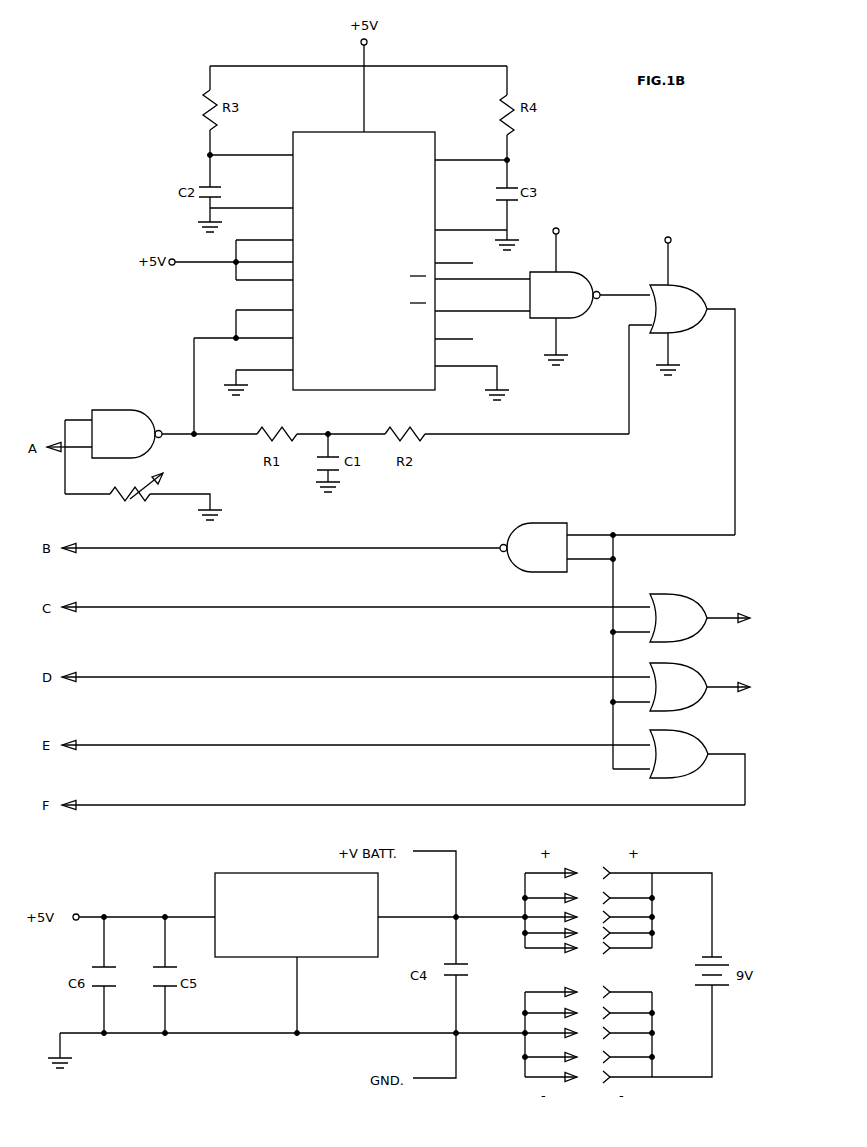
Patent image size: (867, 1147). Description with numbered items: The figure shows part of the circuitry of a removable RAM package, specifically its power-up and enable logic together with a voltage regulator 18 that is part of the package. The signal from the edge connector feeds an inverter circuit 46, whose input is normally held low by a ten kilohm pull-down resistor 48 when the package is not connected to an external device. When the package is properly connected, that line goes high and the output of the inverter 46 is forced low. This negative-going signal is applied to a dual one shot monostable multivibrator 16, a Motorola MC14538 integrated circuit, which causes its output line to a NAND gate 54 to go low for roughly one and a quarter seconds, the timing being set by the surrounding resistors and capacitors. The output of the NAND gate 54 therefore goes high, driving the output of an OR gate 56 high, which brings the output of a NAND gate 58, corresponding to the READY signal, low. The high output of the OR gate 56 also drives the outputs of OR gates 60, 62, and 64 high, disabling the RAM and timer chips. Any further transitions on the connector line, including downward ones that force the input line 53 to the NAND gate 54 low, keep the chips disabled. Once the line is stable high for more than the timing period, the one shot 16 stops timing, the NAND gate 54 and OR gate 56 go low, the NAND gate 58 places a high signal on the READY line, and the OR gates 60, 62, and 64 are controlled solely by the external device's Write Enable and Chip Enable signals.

The dual one shot monostable multivibrator 16 is at (370, 392).
The voltage regulator 18 is at (265, 873).
The inverter circuit 46 is at (118, 410).
The pull-down resistor 48 is at (143, 492).
The input line 53 is at (485, 313).
The NAND gate 54 is at (583, 318).
The OR gate 56 is at (683, 285).
The NAND gate 58 is at (520, 572).
The OR gate 60 is at (675, 593).
The OR gate 62 is at (690, 704).
The OR gate 64 is at (685, 778).